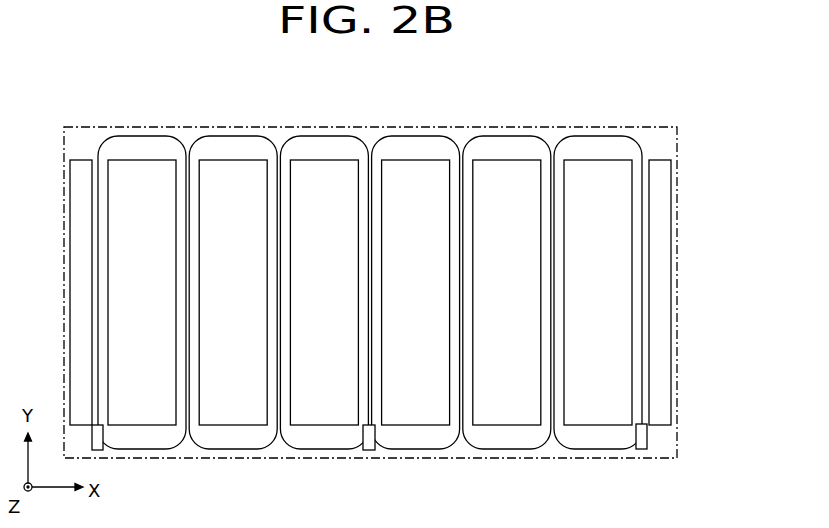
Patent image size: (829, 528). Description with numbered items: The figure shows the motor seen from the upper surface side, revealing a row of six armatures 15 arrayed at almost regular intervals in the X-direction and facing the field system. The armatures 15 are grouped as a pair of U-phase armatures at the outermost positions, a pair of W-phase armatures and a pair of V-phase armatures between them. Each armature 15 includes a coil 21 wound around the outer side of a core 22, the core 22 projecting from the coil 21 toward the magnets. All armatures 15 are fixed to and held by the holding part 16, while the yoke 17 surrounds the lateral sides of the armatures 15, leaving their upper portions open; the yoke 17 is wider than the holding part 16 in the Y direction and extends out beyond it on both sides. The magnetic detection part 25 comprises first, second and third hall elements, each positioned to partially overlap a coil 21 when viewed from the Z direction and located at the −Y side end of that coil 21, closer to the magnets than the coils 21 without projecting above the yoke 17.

The armature 15 is at (370, 252).
The holding part 16 is at (665, 280).
The yoke 17 is at (678, 303).
The coil 21 is at (370, 269).
The core 22 is at (370, 257).
The magnetic detection part 25 is at (104, 437).